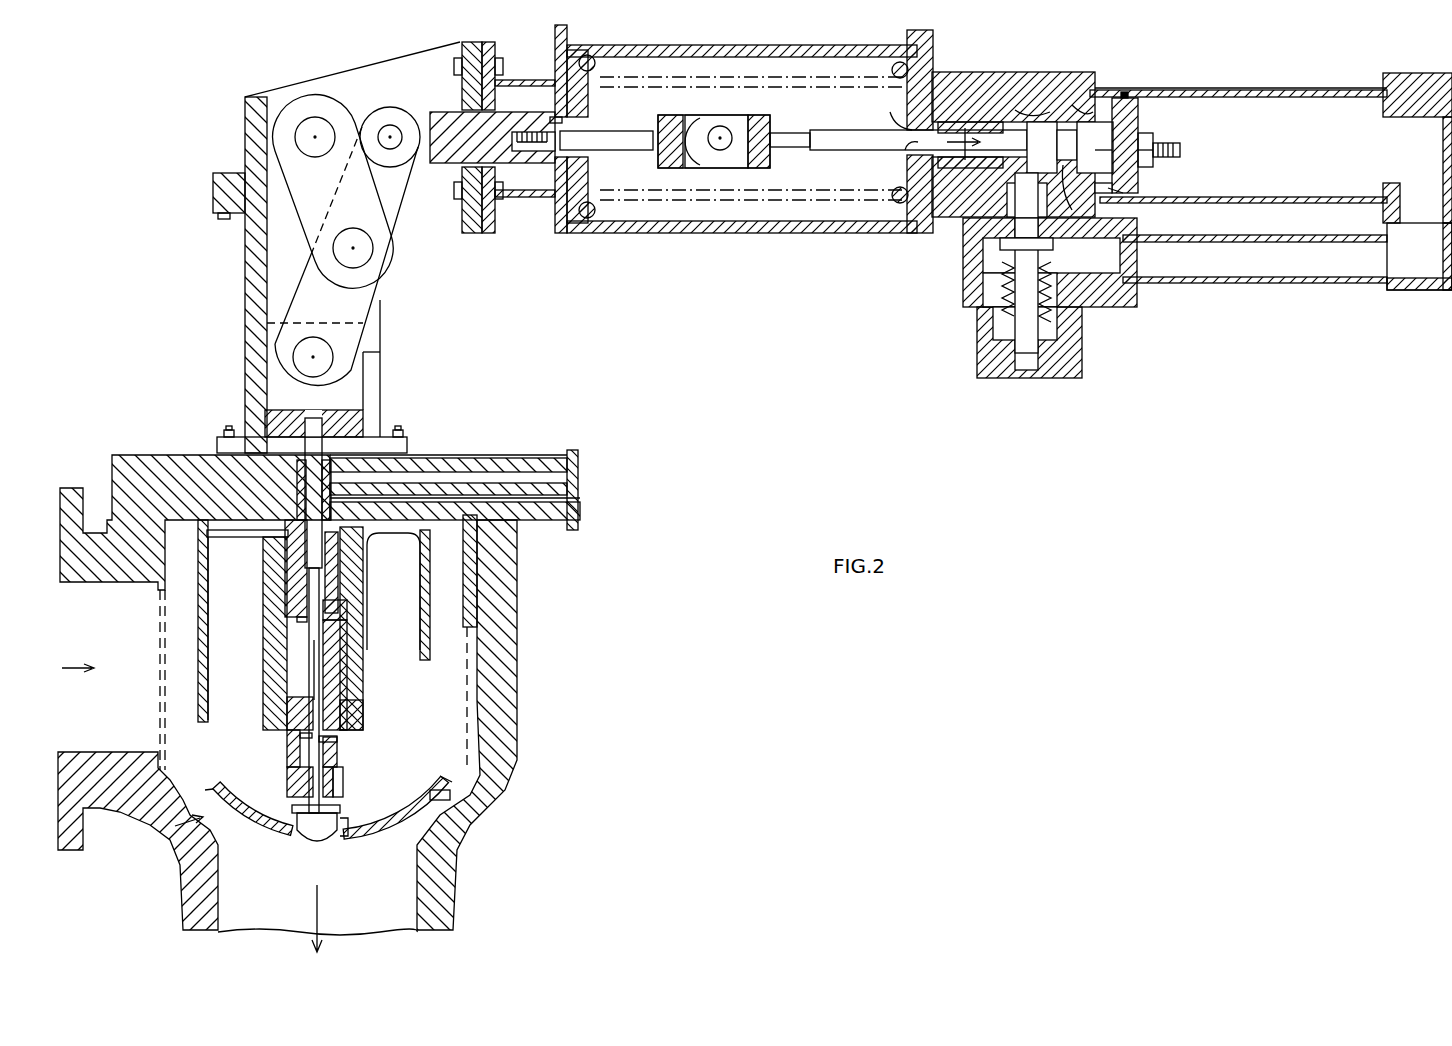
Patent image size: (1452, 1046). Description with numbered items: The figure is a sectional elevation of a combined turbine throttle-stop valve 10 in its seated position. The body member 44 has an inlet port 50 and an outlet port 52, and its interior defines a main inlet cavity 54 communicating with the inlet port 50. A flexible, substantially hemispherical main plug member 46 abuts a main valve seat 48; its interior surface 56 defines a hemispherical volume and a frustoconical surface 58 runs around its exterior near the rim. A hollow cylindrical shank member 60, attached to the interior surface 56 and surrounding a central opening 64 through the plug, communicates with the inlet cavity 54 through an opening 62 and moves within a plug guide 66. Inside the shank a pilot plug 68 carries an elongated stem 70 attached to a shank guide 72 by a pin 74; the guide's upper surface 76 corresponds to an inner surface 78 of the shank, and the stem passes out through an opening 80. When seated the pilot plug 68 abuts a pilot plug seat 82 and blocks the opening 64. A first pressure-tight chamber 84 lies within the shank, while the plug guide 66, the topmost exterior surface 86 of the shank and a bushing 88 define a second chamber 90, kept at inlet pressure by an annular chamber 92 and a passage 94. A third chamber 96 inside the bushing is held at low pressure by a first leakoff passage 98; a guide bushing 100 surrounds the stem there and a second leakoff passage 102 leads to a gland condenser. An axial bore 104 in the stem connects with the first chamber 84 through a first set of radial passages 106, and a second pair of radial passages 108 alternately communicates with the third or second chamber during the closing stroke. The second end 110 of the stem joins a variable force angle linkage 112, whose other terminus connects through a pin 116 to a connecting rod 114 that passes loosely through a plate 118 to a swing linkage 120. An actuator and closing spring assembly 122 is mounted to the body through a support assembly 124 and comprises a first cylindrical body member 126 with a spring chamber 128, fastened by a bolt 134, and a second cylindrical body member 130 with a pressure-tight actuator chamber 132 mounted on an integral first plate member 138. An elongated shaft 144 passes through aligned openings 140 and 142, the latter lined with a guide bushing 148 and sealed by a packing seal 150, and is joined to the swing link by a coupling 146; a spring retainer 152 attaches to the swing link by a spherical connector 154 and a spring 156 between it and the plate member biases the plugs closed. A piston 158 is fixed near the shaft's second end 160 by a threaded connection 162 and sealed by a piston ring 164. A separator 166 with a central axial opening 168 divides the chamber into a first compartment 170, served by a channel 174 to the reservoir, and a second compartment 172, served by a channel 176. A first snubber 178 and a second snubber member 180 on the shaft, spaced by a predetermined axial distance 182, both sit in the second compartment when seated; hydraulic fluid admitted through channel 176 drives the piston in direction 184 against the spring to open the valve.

The valve 10 is at (338, 672).
The body member 44 is at (494, 800).
The flexible main plug member 46 is at (268, 838).
The main valve seat 48 is at (312, 825).
The inlet port 50 is at (128, 662).
The outlet port 52 is at (296, 920).
The main inlet cavity 54 is at (198, 664).
The interior surface 56 is at (392, 800).
The frustoconical surface 58 is at (210, 798).
The hollow shank member 60 is at (345, 718).
The opening 62 is at (340, 803).
The opening 64 is at (312, 845).
The plug guide 66 is at (272, 648).
The pilot plug 68 is at (300, 818).
The elongated stem 70 is at (300, 497).
The shank guide 72 is at (333, 778).
The pin 74 is at (300, 772).
The upper surface 76 is at (300, 755).
The inner surface 78 is at (337, 755).
The opening 80 is at (300, 715).
The pilot plug seat 82 is at (340, 845).
The first pressure-tight chamber 84 is at (338, 740).
The topmost exterior surface 86 is at (336, 698).
The bushing 88 is at (328, 582).
The second chamber 90 is at (333, 626).
The annular chamber 92 is at (224, 535).
The passage 94 is at (221, 628).
The third chamber 96 is at (333, 546).
The first leakoff passage 98 is at (548, 493).
The guide bushing 100 is at (262, 450).
The second leakoff passage 102 is at (522, 462).
The axial bore 104 is at (318, 660).
The first set of radial passages 106 is at (305, 736).
The second pair of radial passages 108 is at (302, 620).
The second end 110 is at (318, 430).
The variable force angle linkage 112 is at (444, 270).
The connecting rod 114 is at (448, 150).
The pin 116 is at (390, 125).
The plate 118 is at (462, 92).
The swing linkage 120 is at (607, 141).
The actuator and closing spring assembly 122 is at (940, 336).
The support assembly 124 is at (245, 338).
The first cylindrical body member 126 is at (625, 230).
The spring chamber 128 is at (722, 224).
The second cylindrical body member 130 is at (1218, 92).
The pressure-tight actuator chamber 132 is at (1318, 97).
The bolt 134 is at (520, 58).
The first plate member 138 is at (918, 55).
The opening 140 is at (905, 150).
The opening 142 is at (887, 109).
The elongated shaft 144 is at (830, 135).
The coupling 146 is at (724, 113).
The guide bushing 148 is at (990, 95).
The packing seal 150 is at (965, 122).
The spring retainer 152 is at (575, 162).
The spherical connector 154 is at (562, 121).
The spring 156 is at (690, 78).
The piston 158 is at (1138, 110).
The second end 160 is at (1180, 150).
The threaded connection 162 is at (1145, 165).
The piston ring 164 is at (1126, 92).
The separator 166 is at (1085, 108).
The central axial opening 168 is at (1025, 96).
The first compartment 170 is at (1225, 190).
The second compartment 172 is at (985, 196).
The channel 174 is at (1443, 168).
The channel 176 is at (1007, 242).
The first snubber 178 is at (1040, 162).
The second snubber member 180 is at (1112, 152).
The predetermined axial distance 182 is at (1069, 189).
The direction 184 is at (975, 170).